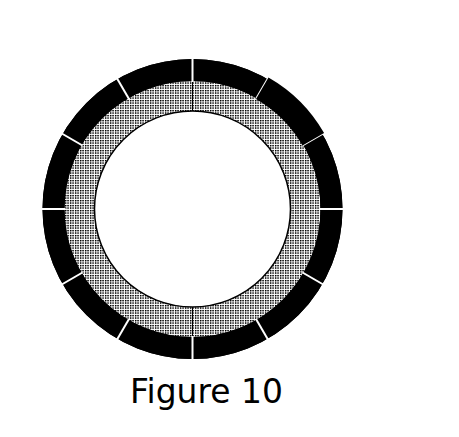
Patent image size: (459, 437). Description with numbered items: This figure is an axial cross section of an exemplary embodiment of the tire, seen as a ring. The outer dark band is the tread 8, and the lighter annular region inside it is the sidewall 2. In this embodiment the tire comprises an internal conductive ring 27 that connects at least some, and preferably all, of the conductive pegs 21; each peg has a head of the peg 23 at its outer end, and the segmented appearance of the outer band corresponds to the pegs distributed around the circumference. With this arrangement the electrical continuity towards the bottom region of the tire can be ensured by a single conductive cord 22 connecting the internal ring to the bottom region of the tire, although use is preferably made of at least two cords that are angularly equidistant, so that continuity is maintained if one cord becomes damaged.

The sidewall 2 is at (85, 172).
The conductive peg 21 is at (192, 59).
The conductive cord 22 is at (193, 92).
The head of the peg 23 is at (206, 60).
The internal conductive ring 27 is at (281, 100).
The tread 8 is at (338, 141).